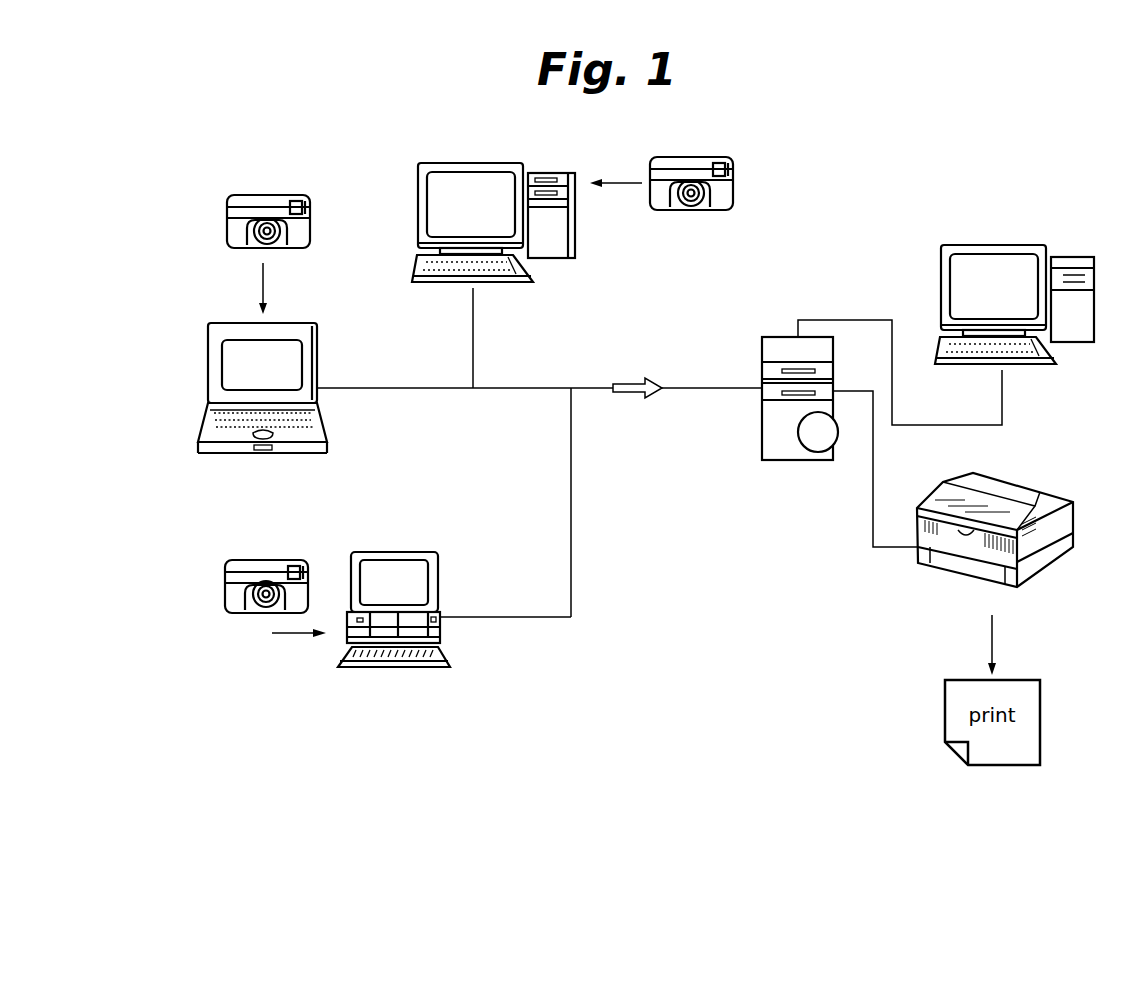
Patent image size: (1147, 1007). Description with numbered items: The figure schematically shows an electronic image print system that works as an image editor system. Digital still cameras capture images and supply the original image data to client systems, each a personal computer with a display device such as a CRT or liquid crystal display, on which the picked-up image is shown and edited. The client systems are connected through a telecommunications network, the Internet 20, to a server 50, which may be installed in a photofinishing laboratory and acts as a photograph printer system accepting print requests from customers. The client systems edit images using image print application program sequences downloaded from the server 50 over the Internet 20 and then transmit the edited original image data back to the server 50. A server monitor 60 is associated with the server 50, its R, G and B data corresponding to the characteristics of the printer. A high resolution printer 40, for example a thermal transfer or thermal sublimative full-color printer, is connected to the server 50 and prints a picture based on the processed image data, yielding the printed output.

The Internet 20 is at (585, 375).
The high resolution printer 40 is at (1073, 512).
The server 50 is at (762, 344).
The server monitor 60 is at (1032, 245).